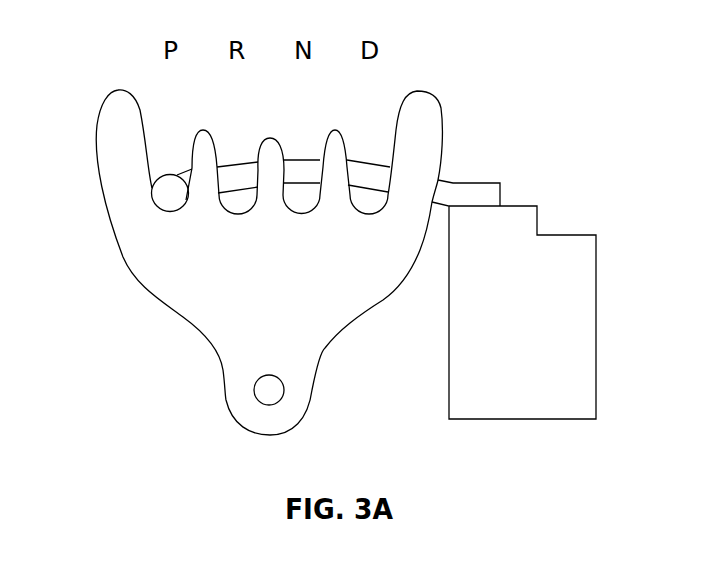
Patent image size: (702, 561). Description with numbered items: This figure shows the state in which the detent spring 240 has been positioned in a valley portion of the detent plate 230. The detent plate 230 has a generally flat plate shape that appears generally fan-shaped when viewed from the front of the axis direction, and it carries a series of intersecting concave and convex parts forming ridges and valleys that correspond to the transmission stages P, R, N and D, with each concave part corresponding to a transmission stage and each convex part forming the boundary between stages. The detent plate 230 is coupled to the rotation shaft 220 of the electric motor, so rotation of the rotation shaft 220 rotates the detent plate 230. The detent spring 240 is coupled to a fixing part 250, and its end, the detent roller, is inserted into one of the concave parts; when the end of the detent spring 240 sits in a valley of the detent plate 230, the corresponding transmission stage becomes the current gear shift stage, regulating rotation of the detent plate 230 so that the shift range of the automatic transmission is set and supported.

The rotation shaft 220 is at (254, 390).
The detent plate 230 is at (123, 253).
The detent spring 240 is at (170, 175).
The fixing part 250 is at (480, 183).